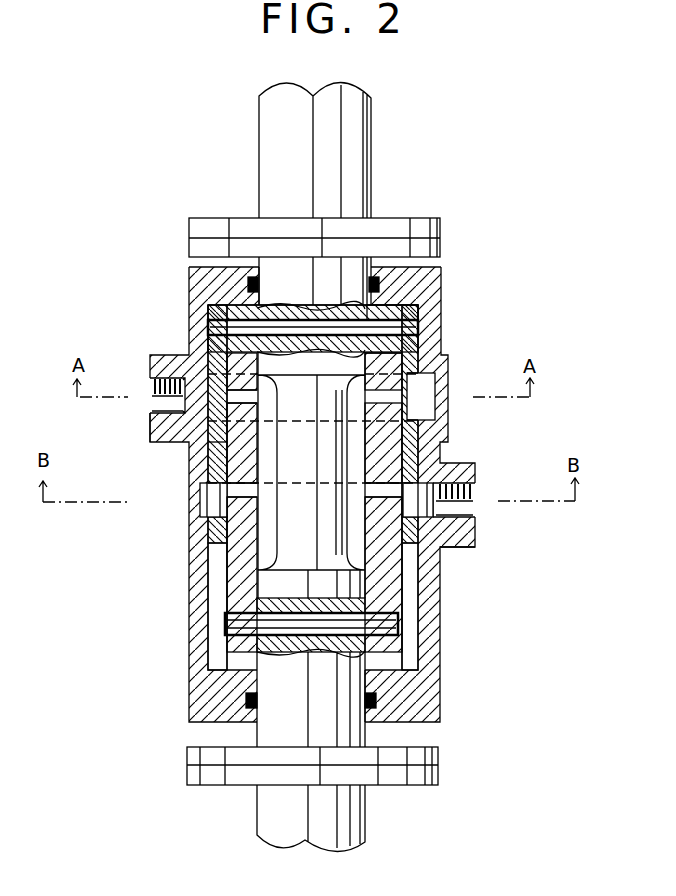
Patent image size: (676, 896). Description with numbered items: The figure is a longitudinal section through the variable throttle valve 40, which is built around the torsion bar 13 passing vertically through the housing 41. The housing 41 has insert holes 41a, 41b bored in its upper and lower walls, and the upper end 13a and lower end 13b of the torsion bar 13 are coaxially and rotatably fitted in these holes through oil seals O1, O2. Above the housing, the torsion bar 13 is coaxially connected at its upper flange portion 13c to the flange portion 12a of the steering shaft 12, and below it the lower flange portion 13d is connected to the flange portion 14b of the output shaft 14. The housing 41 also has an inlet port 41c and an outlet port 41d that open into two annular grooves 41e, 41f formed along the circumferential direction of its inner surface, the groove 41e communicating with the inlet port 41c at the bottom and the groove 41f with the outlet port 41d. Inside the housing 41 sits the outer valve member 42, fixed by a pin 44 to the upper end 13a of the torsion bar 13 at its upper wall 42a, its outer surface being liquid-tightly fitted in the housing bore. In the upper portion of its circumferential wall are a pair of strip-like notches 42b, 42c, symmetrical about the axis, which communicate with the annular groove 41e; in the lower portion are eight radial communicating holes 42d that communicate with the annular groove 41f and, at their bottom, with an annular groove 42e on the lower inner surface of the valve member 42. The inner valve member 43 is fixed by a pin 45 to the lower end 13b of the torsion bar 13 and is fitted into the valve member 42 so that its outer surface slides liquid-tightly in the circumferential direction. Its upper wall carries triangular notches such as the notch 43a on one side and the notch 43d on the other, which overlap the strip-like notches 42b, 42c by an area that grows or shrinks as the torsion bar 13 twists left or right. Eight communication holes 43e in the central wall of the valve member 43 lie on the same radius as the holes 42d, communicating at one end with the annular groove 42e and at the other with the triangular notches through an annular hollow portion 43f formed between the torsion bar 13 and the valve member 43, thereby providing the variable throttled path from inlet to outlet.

The steering shaft 12 is at (371, 140).
The flange portion of steering shaft 12a is at (193, 230).
The torsion bar 13 is at (317, 474).
The upper end of torsion bar 13a is at (338, 270).
The lower end of torsion bar 13b is at (270, 725).
The upper flange portion of torsion bar 13c is at (197, 249).
The lower flange portion of torsion bar 13d is at (215, 760).
The output shaft 14 is at (255, 813).
The flange portion of output shaft 14b is at (425, 773).
The variable throttle valve 40 is at (462, 266).
The housing 41 is at (440, 313).
The insert hole 41a is at (263, 266).
The insert hole 41b is at (367, 728).
The inlet port 41c is at (158, 408).
The outlet port 41d is at (477, 483).
The annular groove 41e is at (158, 436).
The annular groove 41f is at (430, 513).
The valve member 42 is at (226, 356).
The upper wall of valve member 42a is at (423, 307).
The strip-like notch 42b is at (195, 442).
The strip-like notch 42c is at (420, 372).
The communicating hole 42d is at (200, 507).
The annular groove of valve member 42e is at (387, 503).
The valve member 43 is at (238, 573).
The triangular notch 43a is at (230, 397).
The triangular notch 43d is at (413, 390).
The communication hole 43e is at (245, 503).
The annular hollow portion 43f is at (358, 550).
The pin 44 is at (206, 320).
The pin 45 is at (227, 620).
The oil seal O1 is at (250, 285).
The oil seal O2 is at (243, 698).